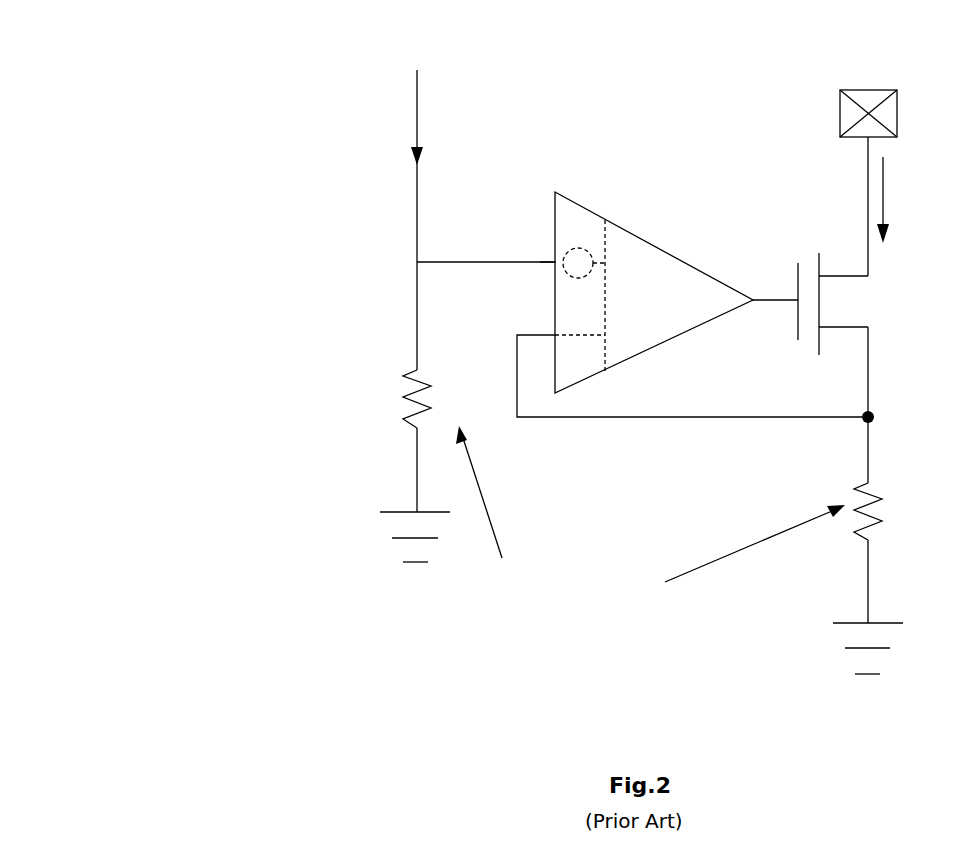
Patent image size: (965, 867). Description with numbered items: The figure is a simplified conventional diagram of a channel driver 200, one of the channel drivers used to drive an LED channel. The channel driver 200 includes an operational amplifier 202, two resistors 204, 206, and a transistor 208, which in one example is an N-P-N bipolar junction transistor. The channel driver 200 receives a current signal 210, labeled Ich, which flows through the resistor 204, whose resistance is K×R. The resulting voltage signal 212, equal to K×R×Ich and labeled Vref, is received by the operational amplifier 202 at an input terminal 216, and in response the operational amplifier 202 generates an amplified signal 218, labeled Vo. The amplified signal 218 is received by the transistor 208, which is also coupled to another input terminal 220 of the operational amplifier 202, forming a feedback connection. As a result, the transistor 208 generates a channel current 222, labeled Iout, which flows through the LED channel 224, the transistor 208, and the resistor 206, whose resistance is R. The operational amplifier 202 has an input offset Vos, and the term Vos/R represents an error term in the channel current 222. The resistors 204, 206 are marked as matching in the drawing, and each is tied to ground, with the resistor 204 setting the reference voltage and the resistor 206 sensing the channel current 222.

The channel driver 200 is at (336, 660).
The operational amplifier 202 is at (662, 251).
The resistor 204 is at (402, 398).
The resistor 206 is at (877, 497).
The transistor 208 is at (836, 307).
The current signal 210 is at (418, 145).
The voltage signal 212 is at (450, 243).
The input terminal 216 is at (550, 266).
The amplified signal 218 is at (782, 305).
The input terminal 220 is at (543, 340).
The channel current 222 is at (884, 157).
The LED load ILEDX 224 is at (863, 90).